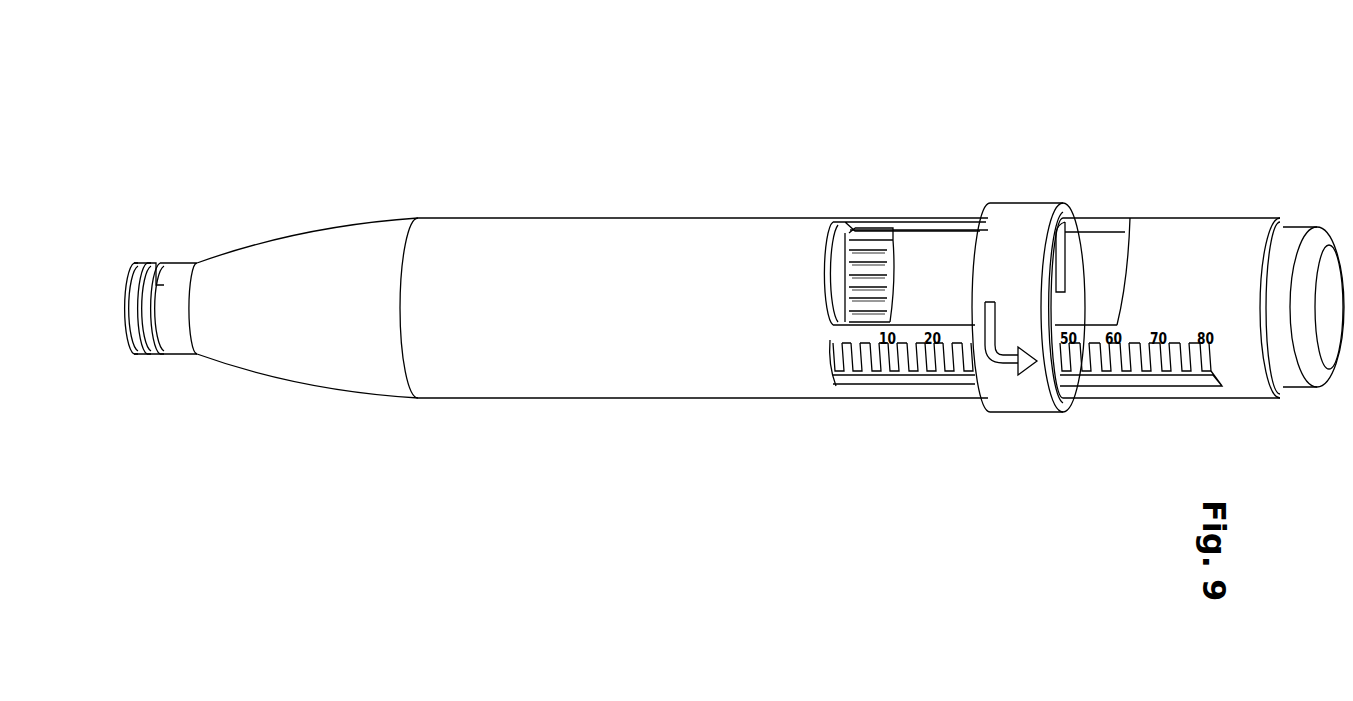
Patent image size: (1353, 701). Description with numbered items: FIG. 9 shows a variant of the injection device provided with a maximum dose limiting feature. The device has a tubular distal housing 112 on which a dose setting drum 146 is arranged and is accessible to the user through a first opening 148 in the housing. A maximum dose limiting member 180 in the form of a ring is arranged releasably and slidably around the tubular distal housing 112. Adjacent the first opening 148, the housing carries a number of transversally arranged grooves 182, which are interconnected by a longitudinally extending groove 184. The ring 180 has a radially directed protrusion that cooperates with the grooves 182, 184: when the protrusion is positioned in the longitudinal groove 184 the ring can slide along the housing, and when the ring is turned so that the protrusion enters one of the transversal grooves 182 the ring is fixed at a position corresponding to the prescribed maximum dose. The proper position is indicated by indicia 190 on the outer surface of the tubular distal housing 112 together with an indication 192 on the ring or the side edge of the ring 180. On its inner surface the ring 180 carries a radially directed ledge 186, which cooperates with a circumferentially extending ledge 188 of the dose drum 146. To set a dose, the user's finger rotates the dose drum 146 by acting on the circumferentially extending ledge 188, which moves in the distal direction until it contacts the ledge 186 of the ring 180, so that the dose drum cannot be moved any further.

The tubular distal housing 112 is at (711, 301).
The dose setting drum 146 is at (950, 313).
The first opening 148 is at (944, 230).
The maximum dose limiting member 180 is at (1022, 218).
The transversal grooves 182 is at (908, 355).
The longitudinally extending groove 184 is at (853, 377).
The radially directed ledge 186 is at (1062, 247).
The circumferentially extending ledge 188 is at (876, 240).
The indicia 190 is at (1205, 332).
The indication 192 is at (1026, 370).